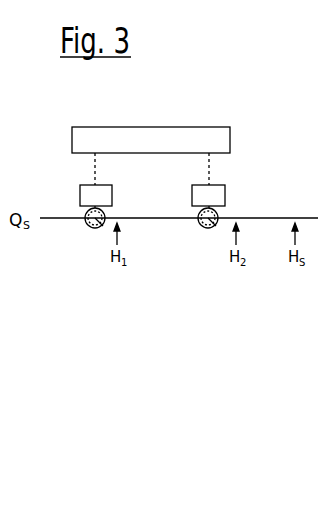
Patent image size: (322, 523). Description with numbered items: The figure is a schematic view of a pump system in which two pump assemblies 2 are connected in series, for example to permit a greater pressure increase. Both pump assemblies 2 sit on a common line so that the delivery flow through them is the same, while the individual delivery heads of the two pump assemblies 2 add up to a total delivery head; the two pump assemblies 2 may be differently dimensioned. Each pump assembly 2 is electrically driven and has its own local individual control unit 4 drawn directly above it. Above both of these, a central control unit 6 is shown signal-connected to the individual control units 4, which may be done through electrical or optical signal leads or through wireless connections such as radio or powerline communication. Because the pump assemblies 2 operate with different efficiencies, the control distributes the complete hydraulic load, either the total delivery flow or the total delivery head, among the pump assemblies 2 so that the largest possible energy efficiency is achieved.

The pump assembly 2 is at (86, 226).
The individual control unit 4 is at (152, 196).
The central control unit 6 is at (151, 156).